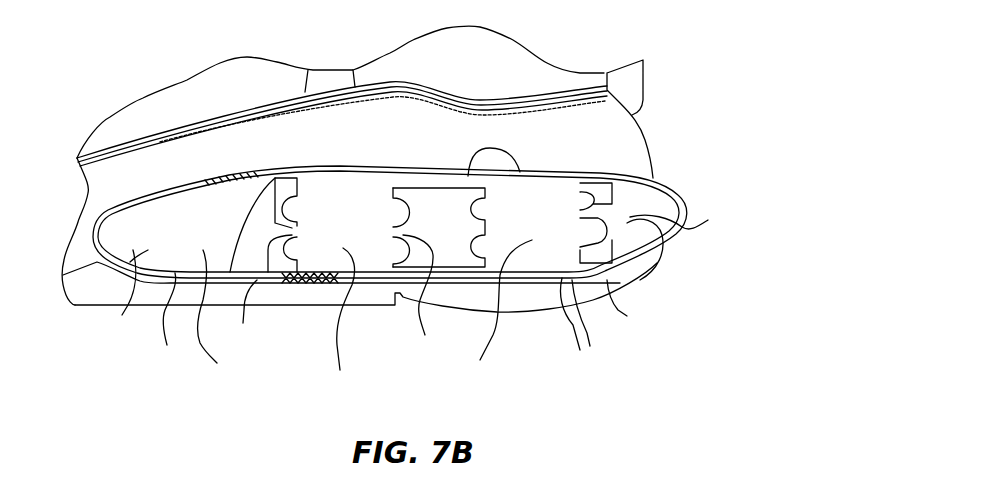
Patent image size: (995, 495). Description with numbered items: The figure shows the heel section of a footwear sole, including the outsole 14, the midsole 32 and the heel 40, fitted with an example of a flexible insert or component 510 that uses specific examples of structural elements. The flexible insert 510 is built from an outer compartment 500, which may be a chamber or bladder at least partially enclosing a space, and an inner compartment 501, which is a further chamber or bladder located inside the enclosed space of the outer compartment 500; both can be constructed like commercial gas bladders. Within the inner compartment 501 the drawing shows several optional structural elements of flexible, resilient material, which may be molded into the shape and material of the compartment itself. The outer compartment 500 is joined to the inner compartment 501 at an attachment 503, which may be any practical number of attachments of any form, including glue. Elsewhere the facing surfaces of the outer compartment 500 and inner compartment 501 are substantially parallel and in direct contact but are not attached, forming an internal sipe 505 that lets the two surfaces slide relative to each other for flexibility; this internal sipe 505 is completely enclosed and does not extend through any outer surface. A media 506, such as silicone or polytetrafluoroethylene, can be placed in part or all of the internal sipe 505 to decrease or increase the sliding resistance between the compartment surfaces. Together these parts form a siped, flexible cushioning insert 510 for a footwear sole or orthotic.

The outsole 14 is at (539, 305).
The midsole 32 is at (522, 299).
The heel 40 is at (341, 297).
The outer compartment 500 is at (302, 167).
The inner compartment 501 is at (200, 184).
The attachment 503 is at (233, 177).
The internal sipe 505 is at (375, 251).
The media of internal sipe 506 is at (323, 278).
The flexible insert 510 is at (691, 246).